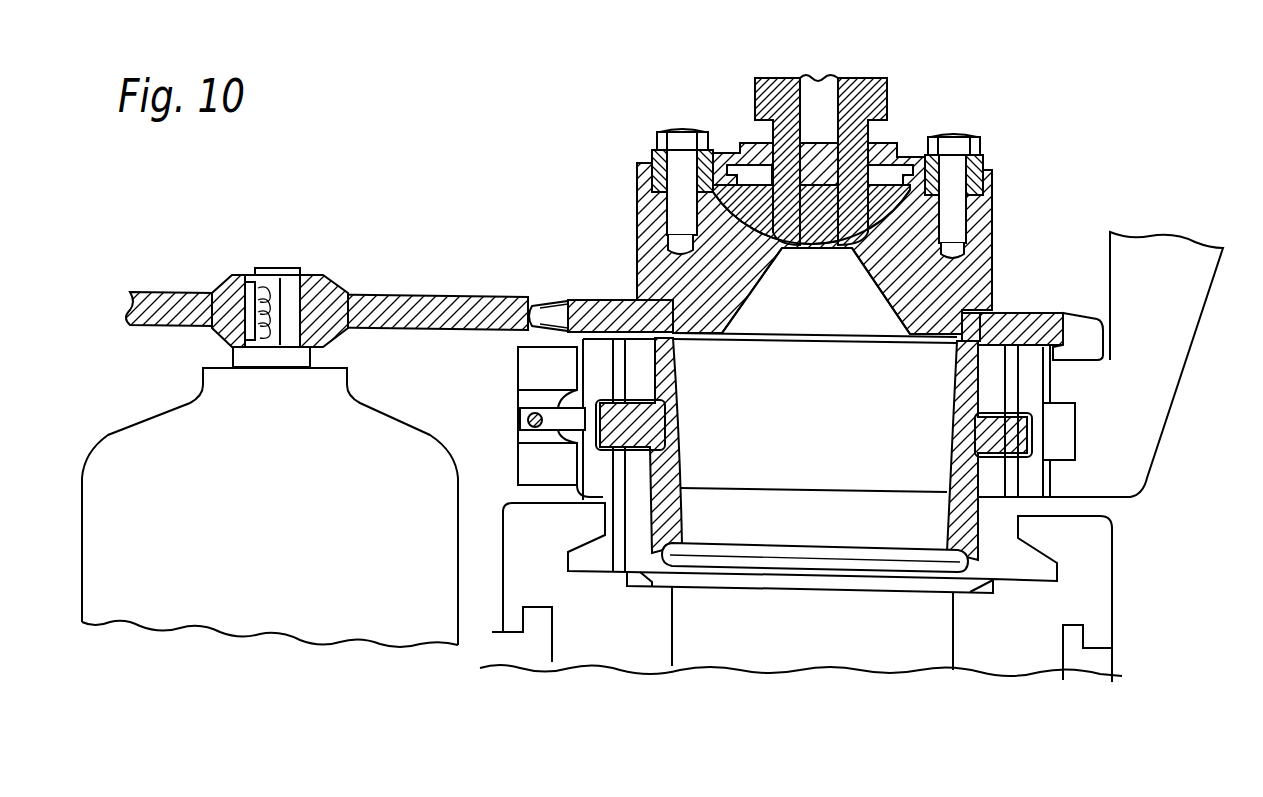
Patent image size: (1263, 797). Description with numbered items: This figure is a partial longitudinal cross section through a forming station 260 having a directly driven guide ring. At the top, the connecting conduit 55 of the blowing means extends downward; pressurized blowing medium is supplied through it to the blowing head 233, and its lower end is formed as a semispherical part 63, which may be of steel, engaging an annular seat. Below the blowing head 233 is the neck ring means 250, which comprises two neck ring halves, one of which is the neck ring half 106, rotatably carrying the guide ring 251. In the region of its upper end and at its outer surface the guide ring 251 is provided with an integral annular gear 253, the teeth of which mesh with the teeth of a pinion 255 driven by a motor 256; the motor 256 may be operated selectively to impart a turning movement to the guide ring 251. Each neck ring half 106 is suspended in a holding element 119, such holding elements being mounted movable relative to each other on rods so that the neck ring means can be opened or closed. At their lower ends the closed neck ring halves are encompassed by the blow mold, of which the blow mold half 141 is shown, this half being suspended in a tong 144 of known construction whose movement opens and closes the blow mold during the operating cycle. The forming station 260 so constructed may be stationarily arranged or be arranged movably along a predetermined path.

The connecting conduit 55 is at (888, 94).
The semispherical part 63 is at (856, 201).
The neck ring half 106 is at (652, 381).
The holding element 119 is at (516, 358).
The blow mold half 141 is at (1114, 591).
The tong 144 is at (497, 634).
The blowing head 233 is at (880, 312).
The neck ring means 250 is at (722, 423).
The guide ring 251 is at (1030, 315).
The annular gear 253 is at (1093, 324).
The pinion 255 is at (366, 301).
The motor 256 is at (175, 422).
The forming station 260 is at (636, 213).